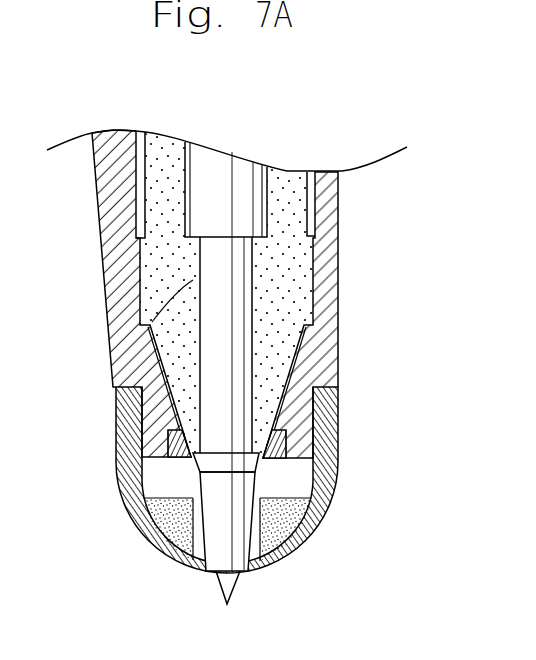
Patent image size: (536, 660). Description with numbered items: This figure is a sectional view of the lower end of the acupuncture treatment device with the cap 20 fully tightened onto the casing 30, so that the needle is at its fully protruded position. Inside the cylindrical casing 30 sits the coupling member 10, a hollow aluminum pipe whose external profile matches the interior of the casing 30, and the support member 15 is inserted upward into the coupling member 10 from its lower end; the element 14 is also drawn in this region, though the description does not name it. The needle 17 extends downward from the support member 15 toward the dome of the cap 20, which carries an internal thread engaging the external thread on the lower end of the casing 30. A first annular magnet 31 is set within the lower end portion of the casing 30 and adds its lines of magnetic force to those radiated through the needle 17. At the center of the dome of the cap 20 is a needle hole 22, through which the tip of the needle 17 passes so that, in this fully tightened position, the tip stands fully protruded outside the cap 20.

The coupling member 10 is at (136, 180).
The nib holder 14 is at (117, 356).
The support member 15 is at (292, 253).
The needle 17 is at (210, 521).
The cap 20 is at (348, 485).
The needle hole 22 is at (212, 572).
The casing 30 is at (120, 274).
The first annular magnet 31 is at (168, 444).